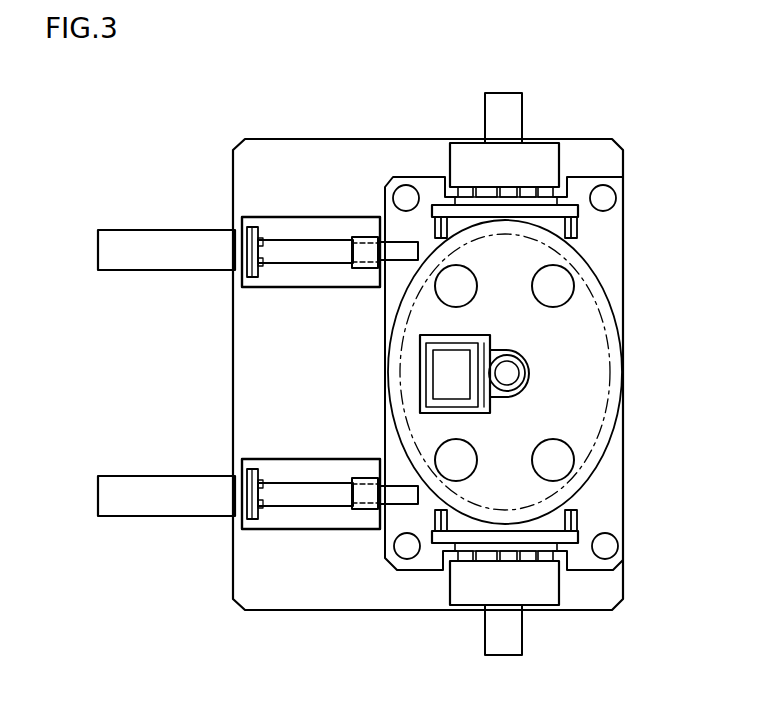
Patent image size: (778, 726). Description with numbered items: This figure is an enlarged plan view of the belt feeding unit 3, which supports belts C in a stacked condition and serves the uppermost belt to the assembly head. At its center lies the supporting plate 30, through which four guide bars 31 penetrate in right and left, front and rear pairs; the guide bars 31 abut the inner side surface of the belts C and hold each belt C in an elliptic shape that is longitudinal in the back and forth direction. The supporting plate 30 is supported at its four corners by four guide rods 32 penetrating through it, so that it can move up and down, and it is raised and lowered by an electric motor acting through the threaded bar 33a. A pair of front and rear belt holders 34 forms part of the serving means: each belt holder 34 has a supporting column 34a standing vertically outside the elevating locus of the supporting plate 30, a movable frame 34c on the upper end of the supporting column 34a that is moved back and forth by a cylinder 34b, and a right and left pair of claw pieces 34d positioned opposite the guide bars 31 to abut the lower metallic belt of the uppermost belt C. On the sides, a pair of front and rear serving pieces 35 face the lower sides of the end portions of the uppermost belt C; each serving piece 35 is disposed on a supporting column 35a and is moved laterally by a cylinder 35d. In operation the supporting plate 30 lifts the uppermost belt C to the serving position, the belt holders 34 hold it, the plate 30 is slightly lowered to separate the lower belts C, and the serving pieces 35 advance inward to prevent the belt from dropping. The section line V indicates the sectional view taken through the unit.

The belt feeding unit 3 is at (228, 137).
The supporting plate 30 is at (612, 247).
The guide bars 31 is at (468, 288).
The guide rods 32 is at (402, 193).
The threaded bar 33a is at (527, 373).
The belt holders 34 is at (547, 367).
The supporting column 34a is at (537, 152).
The cylinder 34b is at (486, 110).
The movable frame 34c is at (577, 210).
The claw pieces 34d is at (565, 223).
The serving pieces 35 is at (407, 255).
The supporting column 35a is at (277, 225).
The cylinder 35d is at (123, 262).
The belt C is at (622, 345).
The section line V- V is at (80, 498).